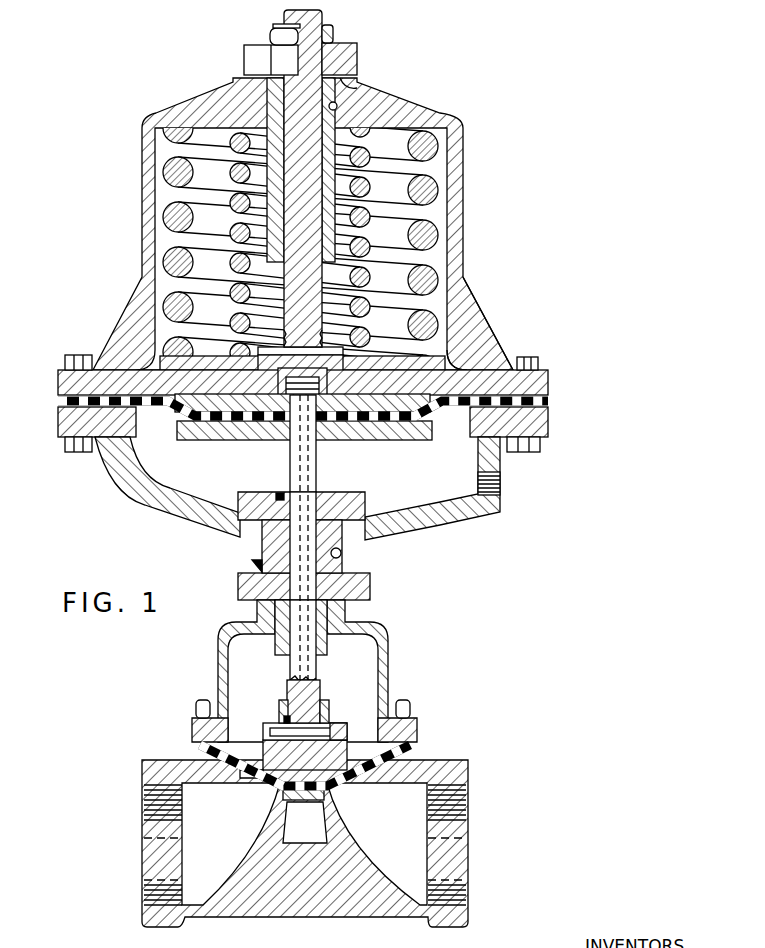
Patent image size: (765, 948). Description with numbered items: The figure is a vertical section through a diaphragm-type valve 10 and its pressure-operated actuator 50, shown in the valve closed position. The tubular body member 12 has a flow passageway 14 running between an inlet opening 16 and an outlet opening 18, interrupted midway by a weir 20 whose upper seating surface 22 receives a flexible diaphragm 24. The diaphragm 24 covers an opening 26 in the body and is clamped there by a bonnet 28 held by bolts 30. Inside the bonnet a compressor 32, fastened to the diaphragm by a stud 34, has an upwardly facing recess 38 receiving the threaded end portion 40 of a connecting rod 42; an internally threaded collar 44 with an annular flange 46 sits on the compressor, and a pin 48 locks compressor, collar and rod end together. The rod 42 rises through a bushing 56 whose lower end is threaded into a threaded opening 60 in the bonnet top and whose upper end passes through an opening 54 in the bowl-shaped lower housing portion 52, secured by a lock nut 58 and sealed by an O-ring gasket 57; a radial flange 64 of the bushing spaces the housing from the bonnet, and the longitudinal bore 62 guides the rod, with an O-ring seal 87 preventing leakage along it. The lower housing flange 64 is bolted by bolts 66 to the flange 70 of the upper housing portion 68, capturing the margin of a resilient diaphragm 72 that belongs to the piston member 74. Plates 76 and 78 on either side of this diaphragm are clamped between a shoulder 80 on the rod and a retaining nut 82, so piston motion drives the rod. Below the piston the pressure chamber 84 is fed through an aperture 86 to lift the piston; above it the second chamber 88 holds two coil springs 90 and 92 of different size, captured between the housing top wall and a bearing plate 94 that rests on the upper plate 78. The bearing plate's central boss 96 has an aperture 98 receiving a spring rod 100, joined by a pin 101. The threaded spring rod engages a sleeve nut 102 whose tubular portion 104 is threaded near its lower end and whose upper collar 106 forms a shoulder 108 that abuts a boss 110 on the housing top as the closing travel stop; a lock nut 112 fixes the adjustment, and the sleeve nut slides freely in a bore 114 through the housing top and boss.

The valve 10 is at (335, 671).
The body member 12 is at (469, 766).
The flow passageway 14 is at (392, 858).
The inlet opening 16 is at (450, 847).
The outlet opening 18 is at (160, 846).
The weir 20 is at (303, 802).
The seating surface 22 is at (320, 790).
The flexible diaphragm 24 is at (250, 780).
The opening 26 is at (402, 760).
The bonnet 28 is at (380, 632).
The bolts 30 is at (204, 710).
The compressor 32 is at (263, 728).
The stud 34 is at (282, 783).
The recess 38 is at (321, 699).
The threaded end portion 40 is at (284, 718).
The connecting rod 42 is at (309, 664).
The collar 44 is at (330, 708).
The annular flange 46 is at (283, 704).
The pin 48 is at (340, 726).
The actuator 50 is at (490, 316).
The lower housing portion 52 is at (440, 525).
The opening 54 is at (341, 553).
The bushing 56 is at (320, 492).
The O-ring gasket 57 is at (250, 566).
The lock nut 58 is at (365, 505).
The threaded opening 60 is at (277, 640).
The longitudinal bore 62 is at (290, 588).
The flange 64 is at (548, 418).
The bolts 66 is at (525, 357).
The upper housing portion 68 is at (463, 190).
The flange 70 is at (548, 382).
The resilient diaphragm 72 is at (58, 402).
The piston member 74 is at (286, 433).
The plate 76 is at (177, 437).
The upper plate 78 is at (176, 412).
The shoulder 80 is at (313, 437).
The retaining nut 82 is at (284, 384).
The pressure chamber 84 is at (418, 472).
The aperture 86 is at (500, 484).
The O-ring seal 87 is at (280, 492).
The second chamber 88 is at (275, 249).
The coil spring 90 is at (165, 170).
The coil spring 92 is at (238, 200).
The bearing plate 94 is at (383, 372).
The central boss 96 is at (340, 355).
The aperture 98 is at (290, 344).
The spring rod 100 is at (310, 270).
The pin 101 is at (262, 350).
The sleeve nut 102 is at (336, 159).
The tubular portion 104 is at (268, 160).
The collar 106 is at (357, 58).
The shoulder 108 is at (357, 84).
The boss 110 is at (244, 78).
The lock nut 112 is at (330, 30).
The bore 114 is at (337, 106).